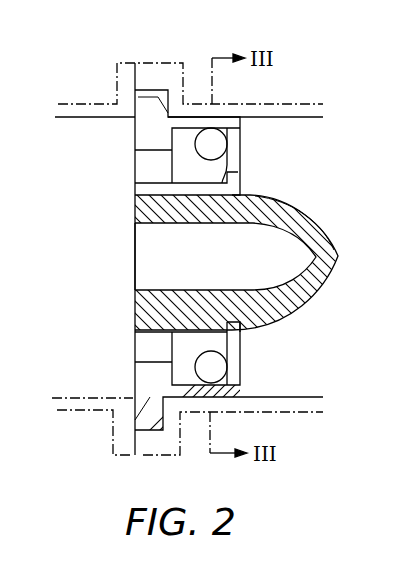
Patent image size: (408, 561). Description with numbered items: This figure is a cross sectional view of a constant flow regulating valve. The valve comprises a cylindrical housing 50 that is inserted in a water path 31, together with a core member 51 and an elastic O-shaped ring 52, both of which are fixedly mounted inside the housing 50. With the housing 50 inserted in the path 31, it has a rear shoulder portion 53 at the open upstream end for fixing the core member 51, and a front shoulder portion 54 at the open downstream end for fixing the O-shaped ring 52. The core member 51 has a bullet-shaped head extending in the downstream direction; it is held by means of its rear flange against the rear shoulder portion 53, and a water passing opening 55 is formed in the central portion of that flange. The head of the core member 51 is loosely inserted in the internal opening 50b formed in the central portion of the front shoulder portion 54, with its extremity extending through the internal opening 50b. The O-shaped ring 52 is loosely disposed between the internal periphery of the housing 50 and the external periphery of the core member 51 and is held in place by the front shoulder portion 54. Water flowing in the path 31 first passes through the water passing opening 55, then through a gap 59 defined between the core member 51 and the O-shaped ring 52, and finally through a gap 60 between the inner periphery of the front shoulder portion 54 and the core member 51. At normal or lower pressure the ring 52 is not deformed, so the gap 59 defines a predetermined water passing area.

The path 31 is at (85, 140).
The housing 50 is at (244, 130).
The internal opening 50b is at (238, 176).
The core member 51 is at (292, 208).
The elastic O-shaped ring 52 is at (229, 355).
The rear shoulder portion 53 is at (135, 384).
The front shoulder portion 54 is at (230, 179).
The water passing opening 55 is at (150, 350).
The gap 59 is at (210, 343).
The gap 60 is at (240, 325).